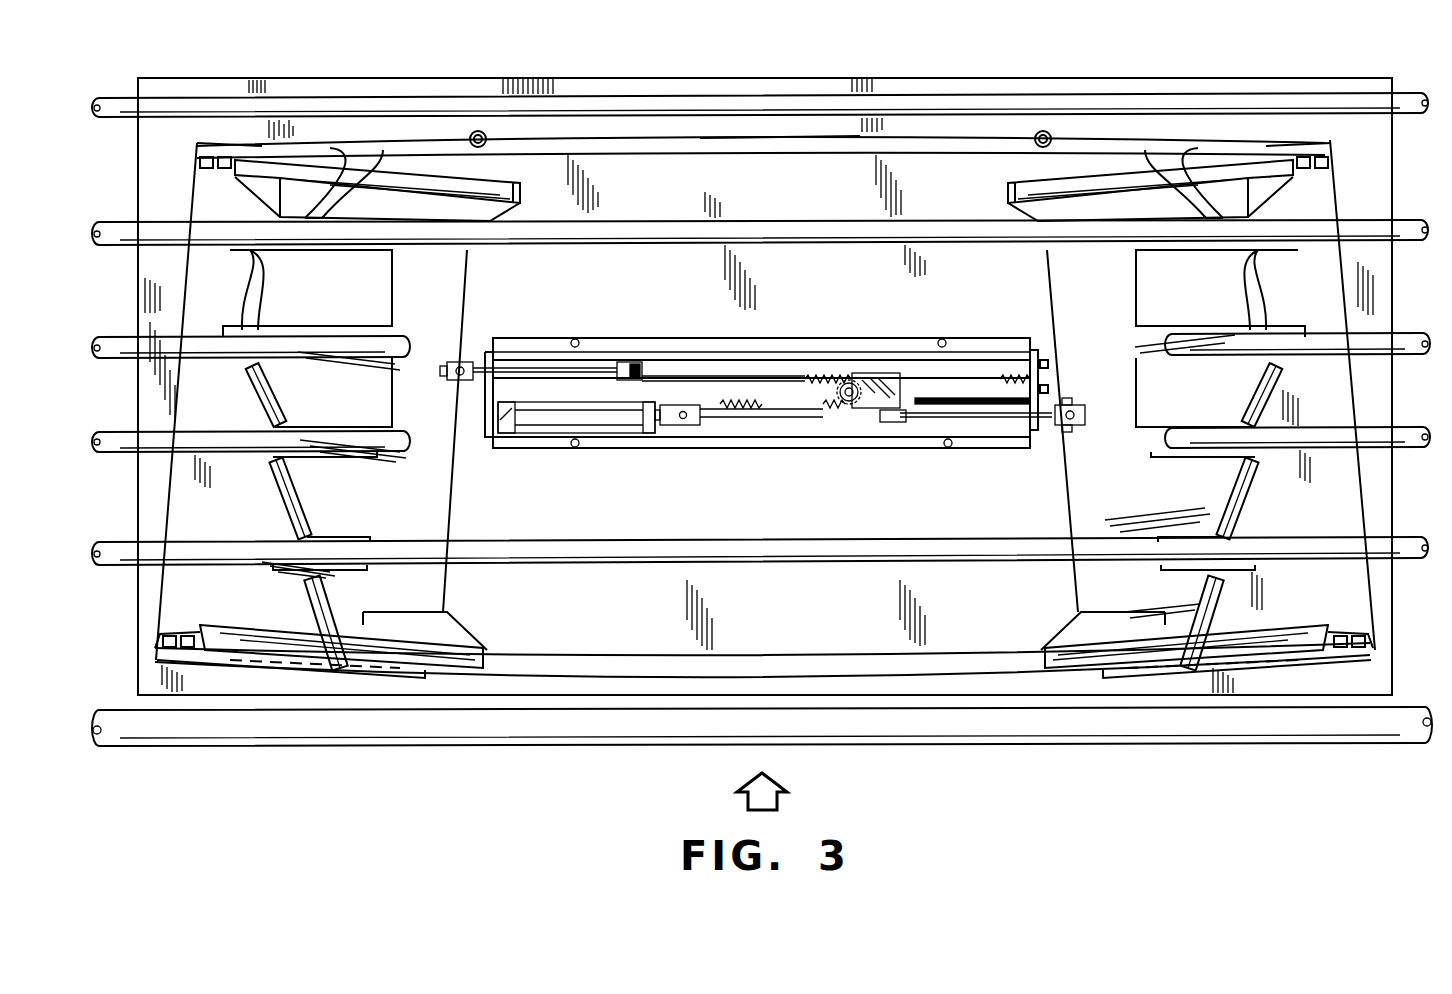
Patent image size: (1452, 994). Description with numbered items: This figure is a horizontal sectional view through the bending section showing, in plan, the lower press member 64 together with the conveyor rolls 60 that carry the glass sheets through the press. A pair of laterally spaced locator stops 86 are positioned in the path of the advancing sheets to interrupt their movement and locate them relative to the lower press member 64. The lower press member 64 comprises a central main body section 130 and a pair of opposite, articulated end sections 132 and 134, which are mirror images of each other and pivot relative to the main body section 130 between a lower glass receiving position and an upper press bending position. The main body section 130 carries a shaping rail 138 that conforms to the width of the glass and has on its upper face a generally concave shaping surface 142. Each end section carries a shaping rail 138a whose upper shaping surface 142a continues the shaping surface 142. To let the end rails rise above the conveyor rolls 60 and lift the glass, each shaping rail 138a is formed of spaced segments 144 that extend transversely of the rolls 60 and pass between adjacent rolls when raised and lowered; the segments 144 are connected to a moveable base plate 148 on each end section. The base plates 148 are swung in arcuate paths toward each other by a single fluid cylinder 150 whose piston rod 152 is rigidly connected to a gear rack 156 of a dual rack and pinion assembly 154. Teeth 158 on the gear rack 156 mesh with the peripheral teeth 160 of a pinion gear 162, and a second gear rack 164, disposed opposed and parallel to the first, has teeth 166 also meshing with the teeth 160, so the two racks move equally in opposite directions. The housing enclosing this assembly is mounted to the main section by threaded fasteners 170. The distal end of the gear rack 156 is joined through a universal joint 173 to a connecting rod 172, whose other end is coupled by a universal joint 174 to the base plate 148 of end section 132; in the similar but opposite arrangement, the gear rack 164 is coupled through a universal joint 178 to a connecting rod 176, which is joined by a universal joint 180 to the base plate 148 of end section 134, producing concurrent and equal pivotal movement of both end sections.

The conveyor rolls 60 is at (1427, 118).
The lower press member 64 is at (1167, 134).
The locator stops 86 is at (478, 130).
The main body section 130 is at (521, 686).
The end section 132 is at (1312, 296).
The end section 134 is at (208, 300).
The shaping rail 138 is at (684, 138).
The shaping rails 138a is at (272, 481).
The shaping surface 142 is at (815, 150).
The shaping surface 142a is at (1273, 366).
The segments 144 is at (262, 350).
The base plate 148 is at (333, 306).
The fluid cylinder 150 is at (530, 428).
The piston rod 152 is at (664, 428).
The rack and pinion assembly 154 is at (872, 366).
The gear rack 156 is at (760, 420).
The teeth 158 is at (723, 410).
The peripheral teeth 160 is at (838, 394).
The pinion gear 162 is at (845, 406).
The second gear rack 164 is at (676, 374).
The teeth 166 is at (813, 376).
The threaded fasteners 170 is at (574, 338).
The connecting rod 172 is at (998, 419).
The universal joint 173 is at (895, 424).
The universal joint 174 is at (1084, 410).
The connecting rod 176 is at (536, 366).
The universal joint 178 is at (628, 362).
The universal joint 180 is at (445, 372).